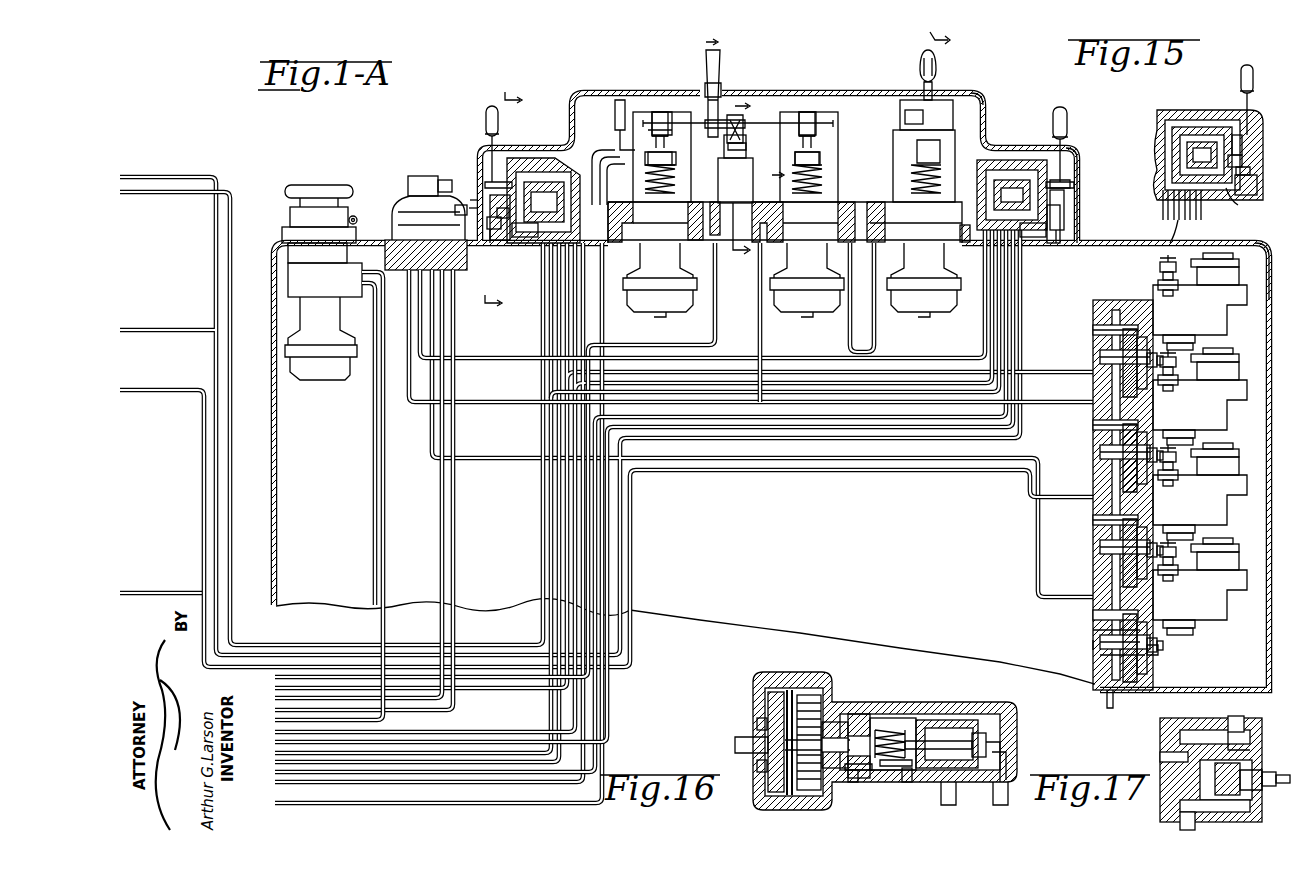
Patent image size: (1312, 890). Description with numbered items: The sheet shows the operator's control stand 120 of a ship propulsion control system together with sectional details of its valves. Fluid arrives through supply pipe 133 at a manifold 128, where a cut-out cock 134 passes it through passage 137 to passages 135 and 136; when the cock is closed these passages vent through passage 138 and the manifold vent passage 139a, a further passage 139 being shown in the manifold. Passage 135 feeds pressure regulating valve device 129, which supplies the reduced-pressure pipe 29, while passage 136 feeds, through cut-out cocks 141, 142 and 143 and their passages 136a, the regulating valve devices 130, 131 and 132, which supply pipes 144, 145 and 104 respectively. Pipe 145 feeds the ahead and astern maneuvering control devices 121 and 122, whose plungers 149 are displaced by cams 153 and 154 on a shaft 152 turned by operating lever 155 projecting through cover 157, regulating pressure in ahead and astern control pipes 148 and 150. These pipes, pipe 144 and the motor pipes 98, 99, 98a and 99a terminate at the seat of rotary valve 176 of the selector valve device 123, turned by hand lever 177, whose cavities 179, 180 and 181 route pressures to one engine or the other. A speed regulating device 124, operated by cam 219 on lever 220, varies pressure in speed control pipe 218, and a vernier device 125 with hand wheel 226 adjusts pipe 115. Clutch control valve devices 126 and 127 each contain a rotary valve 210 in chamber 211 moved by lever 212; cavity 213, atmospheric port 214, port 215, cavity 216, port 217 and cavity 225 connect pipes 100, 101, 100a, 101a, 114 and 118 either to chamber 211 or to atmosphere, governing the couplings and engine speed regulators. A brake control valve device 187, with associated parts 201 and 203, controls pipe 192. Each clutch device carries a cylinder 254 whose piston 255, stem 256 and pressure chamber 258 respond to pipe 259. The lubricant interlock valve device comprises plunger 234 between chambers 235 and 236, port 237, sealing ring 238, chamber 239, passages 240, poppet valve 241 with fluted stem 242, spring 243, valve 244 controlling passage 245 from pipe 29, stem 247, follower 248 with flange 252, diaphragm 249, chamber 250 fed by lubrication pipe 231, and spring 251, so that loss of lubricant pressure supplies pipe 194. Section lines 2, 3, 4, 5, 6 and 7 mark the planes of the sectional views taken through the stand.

In FIG. 1A, the section line 2— 2 is at (911, 255).
In FIG. 1A, the section line 3— 3 is at (772, 171).
In FIG. 1A, the section line 4— 4 is at (787, 109).
In FIG. 1A, the section line 5— 5 is at (716, 154).
In FIG. 1A, the section line 6— 6 is at (652, 109).
In FIG. 1A, the section line 7— 7 is at (510, 201).
In FIG. 1A, the fluid pressure supply pipe 29 is at (212, 326).
In FIG. 16, the fluid pressure supply pipe 29 is at (985, 812).
In FIG. 1A, the pipe 98 is at (455, 508).
In FIG. 1A, the pipe 98a is at (400, 534).
In FIG. 1A, the pipe 99 is at (405, 505).
In FIG. 1A, the pipe 99a is at (445, 533).
In FIG. 1A, the pipe 100 is at (985, 337).
In FIG. 15, the pipe 100 is at (1175, 222).
In FIG. 1A, the pipe 100a is at (570, 290).
In FIG. 1A, the pipe 101 is at (998, 355).
In FIG. 15, the pipe 101 is at (1190, 213).
In FIG. 1A, the pipe 101a is at (548, 270).
In FIG. 1A, the pipe 104 is at (565, 265).
In FIG. 15, the pipe 104 is at (1163, 214).
In FIG. 1A, the pipe 114 is at (1008, 284).
In FIG. 15, the pipe 114 is at (1200, 225).
In FIG. 1A, the pipe 115 is at (398, 210).
In FIG. 1A, the pipe 118 is at (556, 342).
In FIG. 1A, the control stand 120 is at (1265, 252).
In FIG. 1A, the ahead maneuvering control device 121 is at (672, 222).
In FIG. 1A, the astern maneuvering control device 122 is at (826, 210).
In FIG. 1A, the selector valve device 123 is at (398, 222).
In FIG. 1A, the speed regulating device 124 is at (903, 205).
In FIG. 1A, the vernier speed regulating device 125 is at (290, 214).
In FIG. 1A, the clutch control valve device 126 is at (1072, 144).
In FIG. 15, the clutch control valve device 126 is at (1258, 138).
In FIG. 1A, the clutch control device 127 is at (480, 196).
In FIG. 1A, the manifold 128 is at (1093, 610).
In FIG. 17, the manifold 128 is at (1160, 726).
In FIG. 1A, the pressure regulating valve device 129 is at (1248, 577).
In FIG. 1A, the pressure regulating valve device 130 is at (1248, 482).
In FIG. 1A, the pressure regulating valve device 131 is at (1248, 388).
In FIG. 1A, the pressure regulating valve device 132 is at (1248, 290).
In FIG. 1A, the fluid pressure supply pipe 133 is at (1106, 701).
In FIG. 17, the fluid pressure supply pipe 133 is at (1180, 822).
In FIG. 1A, the cut-out cock 134 is at (1134, 635).
In FIG. 1A, the passage 135 is at (1095, 645).
In FIG. 17, the passage 135 is at (1236, 716).
In FIG. 1A, the passage 136 is at (1093, 630).
In FIG. 17, the passage 136 is at (1190, 728).
In FIG. 1A, the passage 136a is at (1095, 332).
In FIG. 1A, the passage 137 is at (1158, 655).
In FIG. 17, the passage 137 is at (1252, 768).
In FIG. 17, the passage 138 is at (1266, 786).
In FIG. 1A, the passage 139 is at (1097, 660).
In FIG. 16, the passage 139 is at (792, 688).
In FIG. 1A, the atmospheric vent passage 139a is at (1100, 357).
In FIG. 17, the atmospheric vent passage 139a is at (1165, 750).
In FIG. 1A, the cut-out cock 141 is at (1132, 540).
In FIG. 1A, the cut-out cock 142 is at (1132, 445).
In FIG. 1A, the cut-out cock 143 is at (1132, 350).
In FIG. 1A, the pipe 144 is at (1000, 473).
In FIG. 1A, the pipe 145 is at (1016, 412).
In FIG. 1A, the ahead control pipe 148 is at (597, 320).
In FIG. 1A, the plunger 149 is at (668, 150).
In FIG. 1A, the astern control pipe 150 is at (818, 350).
In FIG. 1A, the shaft 152 is at (770, 120).
In FIG. 1A, the cam 153 is at (662, 110).
In FIG. 1A, the cam 154 is at (812, 110).
In FIG. 1A, the operating lever 155 is at (720, 60).
In FIG. 1A, the cover 157 is at (985, 92).
In FIG. 1A, the rotary valve 176 is at (400, 200).
In FIG. 1A, the hand operated lever 177 is at (476, 205).
In FIG. 1A, the cavity 179 is at (420, 176).
In FIG. 1A, the cavity 180 is at (445, 180).
In FIG. 1A, the cavity 181 is at (334, 212).
In FIG. 1A, the brake control valve device 187 is at (745, 170).
In FIG. 1A, the pipe 192 is at (720, 343).
In FIG. 16, the pipe 194 is at (934, 812).
In FIG. 1A, the link 201 is at (740, 145).
In FIG. 1A, the link 203 is at (720, 115).
In FIG. 1A, the rotary valve 210 is at (533, 170).
In FIG. 15, the rotary valve 210 is at (1208, 127).
In FIG. 1A, the chamber 211 is at (497, 178).
In FIG. 15, the chamber 211 is at (1250, 170).
In FIG. 1A, the lever 212 is at (487, 112).
In FIG. 15, the lever 212 is at (1250, 68).
In FIG. 1A, the cavity 213 is at (778, 231).
In FIG. 1A, the atmospheric port 214 is at (598, 168).
In FIG. 15, the atmospheric port 214 is at (1193, 153).
In FIG. 1A, the port 215 is at (520, 185).
In FIG. 15, the cavity 216 is at (1243, 140).
In FIG. 15, the port 217 is at (1238, 205).
In FIG. 1A, the speed control pipe 218 is at (916, 375).
In FIG. 15, the speed control pipe 218 is at (1170, 246).
In FIG. 1A, the cam 219 is at (903, 136).
In FIG. 1A, the lever 220 is at (905, 70).
In FIG. 15, the cavity 225 is at (1243, 160).
In FIG. 1A, the hand wheel 226 is at (322, 185).
In FIG. 16, the reduction gear lubrication supply pipe 231 is at (735, 742).
In FIG. 16, the plunger 234 is at (935, 718).
In FIG. 16, the chamber 235 is at (978, 730).
In FIG. 16, the chamber 236 is at (855, 712).
In FIG. 16, the port 237 is at (850, 790).
In FIG. 16, the sealing ring 238 is at (897, 725).
In FIG. 16, the chamber 239 is at (900, 790).
In FIG. 16, the passage 240 is at (854, 784).
In FIG. 16, the poppet valve 241 is at (908, 784).
In FIG. 16, the fluted stem 242 is at (942, 739).
In FIG. 16, the spring 243 is at (910, 716).
In FIG. 16, the valve 244 is at (1002, 735).
In FIG. 16, the passage 245 is at (1008, 750).
In FIG. 16, the stem 247 is at (840, 722).
In FIG. 16, the follower 248 is at (757, 722).
In FIG. 16, the flexible diaphragm 249 is at (776, 690).
In FIG. 16, the chamber 250 is at (768, 700).
In FIG. 16, the spring 251 is at (805, 800).
In FIG. 16, the flange 252 is at (822, 680).
In FIG. 1A, the cylinder 254 is at (494, 230).
In FIG. 15, the cylinder 254 is at (1257, 185).
In FIG. 1A, the piston 255 is at (491, 245).
In FIG. 1A, the stem 256 is at (1082, 177).
In FIG. 1A, the pressure chamber 258 is at (505, 220).
In FIG. 1A, the pipe 259 is at (232, 188).